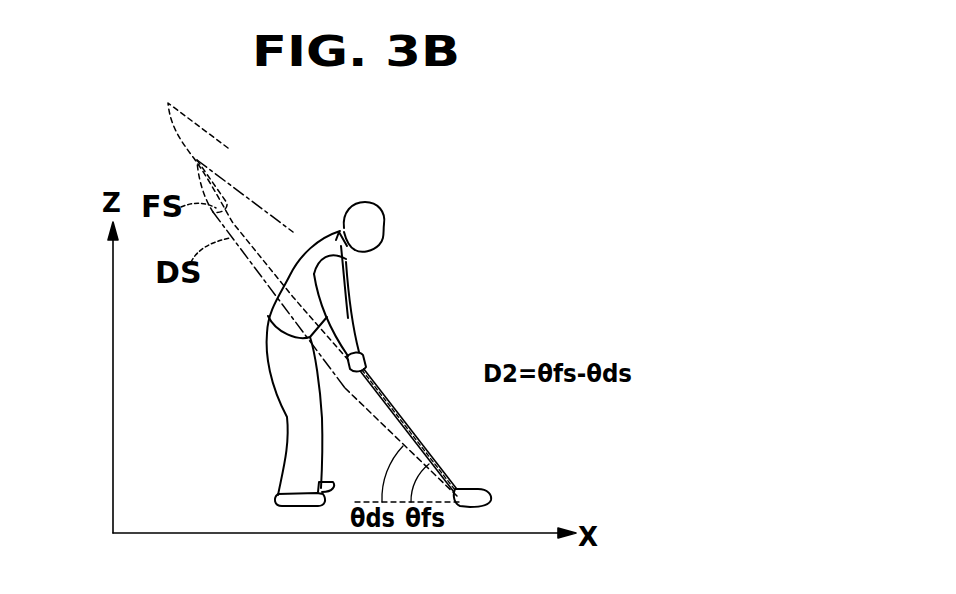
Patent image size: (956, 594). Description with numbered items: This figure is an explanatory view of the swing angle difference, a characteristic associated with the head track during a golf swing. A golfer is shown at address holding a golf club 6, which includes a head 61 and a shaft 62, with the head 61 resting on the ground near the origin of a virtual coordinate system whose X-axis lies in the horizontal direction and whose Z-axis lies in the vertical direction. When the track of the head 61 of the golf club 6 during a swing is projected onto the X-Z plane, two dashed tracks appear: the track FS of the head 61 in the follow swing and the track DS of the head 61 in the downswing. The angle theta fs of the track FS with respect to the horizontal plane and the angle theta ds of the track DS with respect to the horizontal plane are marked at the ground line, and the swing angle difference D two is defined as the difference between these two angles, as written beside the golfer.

The golf club 6 is at (458, 425).
The head 61 is at (492, 498).
The shaft 62 is at (376, 394).